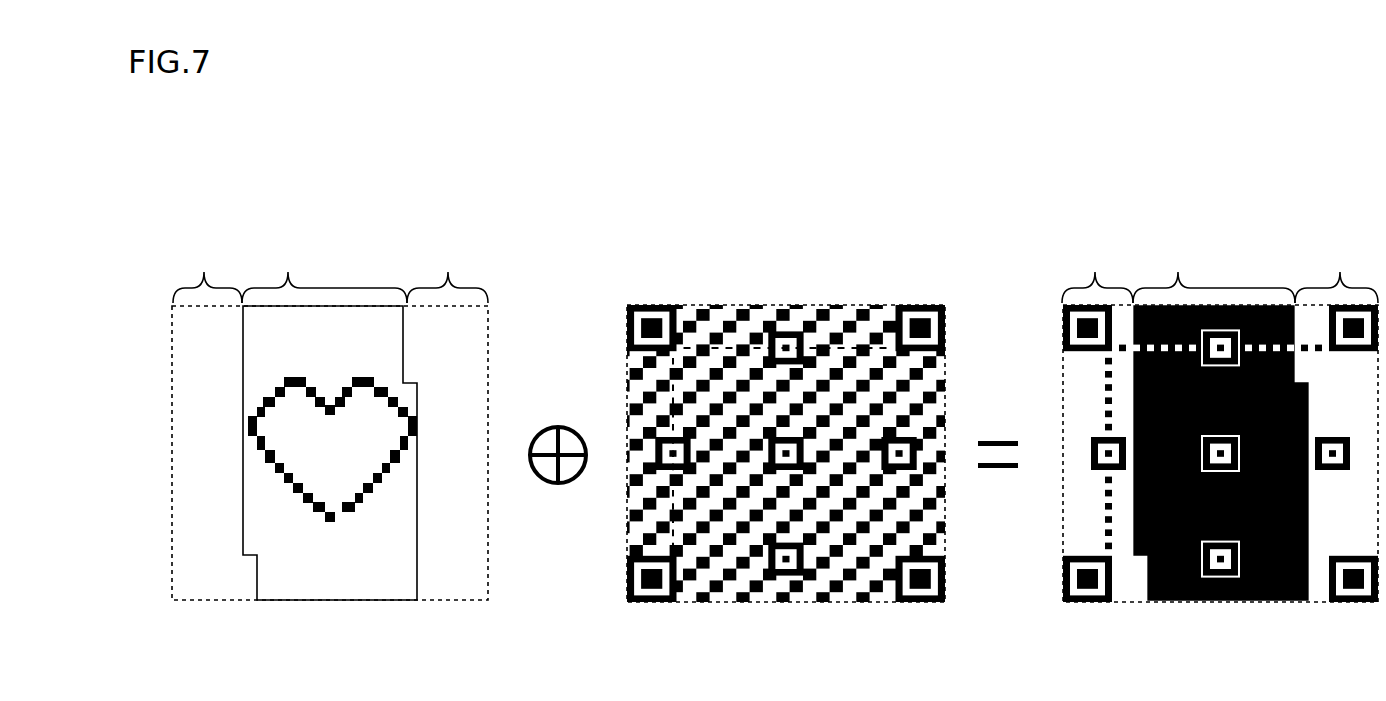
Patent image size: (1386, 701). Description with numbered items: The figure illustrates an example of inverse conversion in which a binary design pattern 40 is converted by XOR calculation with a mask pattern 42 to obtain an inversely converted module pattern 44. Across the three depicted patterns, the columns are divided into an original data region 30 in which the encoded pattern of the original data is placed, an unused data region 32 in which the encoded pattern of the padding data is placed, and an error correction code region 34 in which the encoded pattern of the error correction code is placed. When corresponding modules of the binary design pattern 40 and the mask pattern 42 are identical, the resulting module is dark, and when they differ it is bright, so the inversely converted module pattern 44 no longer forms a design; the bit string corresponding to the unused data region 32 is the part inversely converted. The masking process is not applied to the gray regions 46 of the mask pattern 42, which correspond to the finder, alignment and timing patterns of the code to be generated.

The original data region 30 is at (892, 273).
The unused data region 32 is at (775, 420).
The error correction code region 34 is at (653, 272).
The binary design pattern 40 is at (392, 250).
The mask pattern 42 is at (869, 252).
The inversely converted module pattern 44 is at (1282, 250).
The regions corresponding to the finder, alignment and timing patterns 46 is at (788, 578).